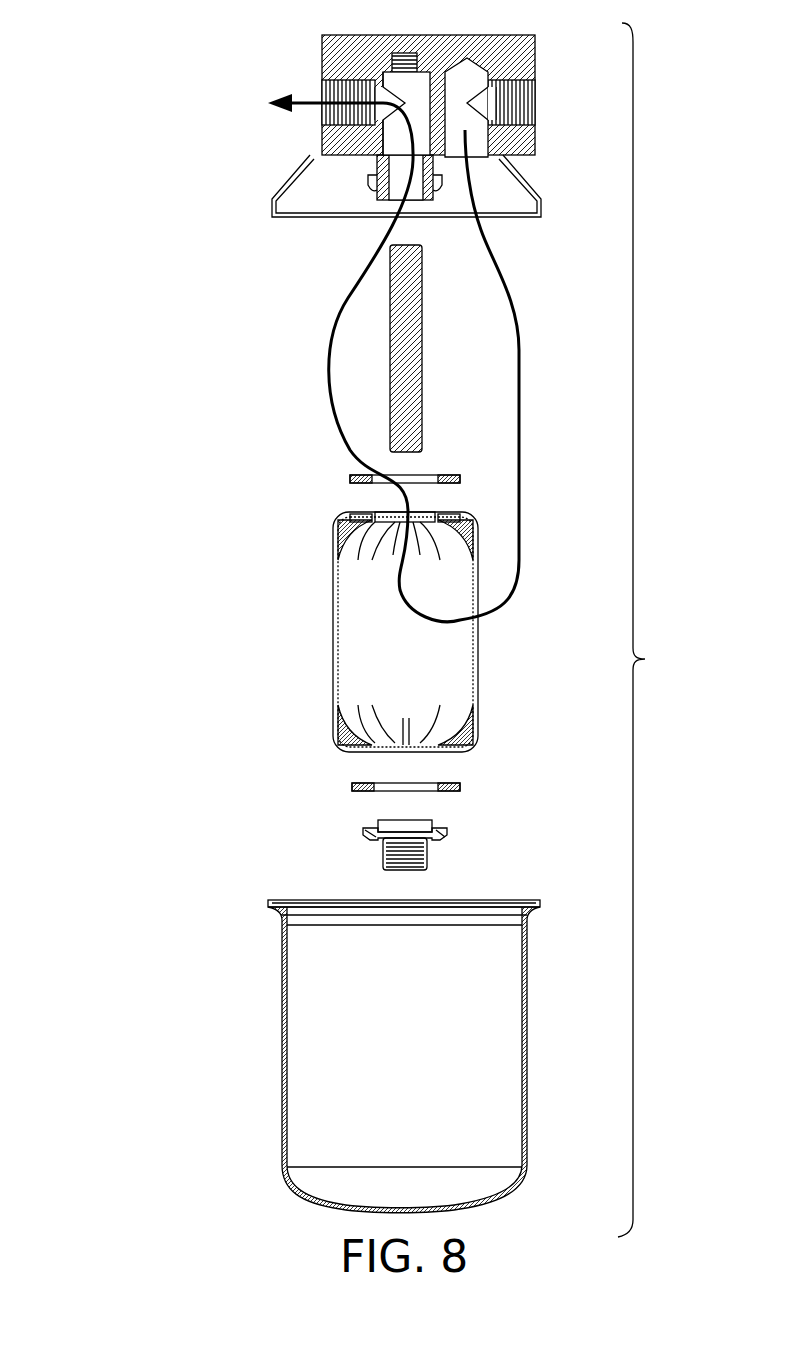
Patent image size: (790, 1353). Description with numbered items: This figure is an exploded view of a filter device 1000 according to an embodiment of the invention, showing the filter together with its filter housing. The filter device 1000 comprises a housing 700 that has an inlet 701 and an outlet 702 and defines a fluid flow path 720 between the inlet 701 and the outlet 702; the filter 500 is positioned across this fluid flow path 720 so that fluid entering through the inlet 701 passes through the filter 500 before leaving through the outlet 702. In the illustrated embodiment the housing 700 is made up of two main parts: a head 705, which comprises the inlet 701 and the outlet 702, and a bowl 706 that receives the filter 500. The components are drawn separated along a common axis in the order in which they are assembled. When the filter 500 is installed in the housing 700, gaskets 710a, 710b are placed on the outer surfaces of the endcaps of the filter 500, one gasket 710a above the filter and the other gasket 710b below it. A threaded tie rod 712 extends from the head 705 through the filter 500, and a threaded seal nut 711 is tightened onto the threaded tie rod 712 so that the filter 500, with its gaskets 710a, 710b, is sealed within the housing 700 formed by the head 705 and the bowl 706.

The filter device 1000 is at (196, 138).
The head 705 is at (463, 35).
The outlet 702 is at (322, 84).
The inlet 701 is at (528, 104).
The fluid flow path 720 is at (522, 352).
The threaded tie rod 712 is at (420, 338).
The gasket 710a is at (448, 470).
The filter 500 is at (292, 619).
The gasket 710b is at (453, 783).
The threaded seal nut 711 is at (427, 849).
The bowl 706 is at (527, 1013).
The housing 700 is at (658, 630).